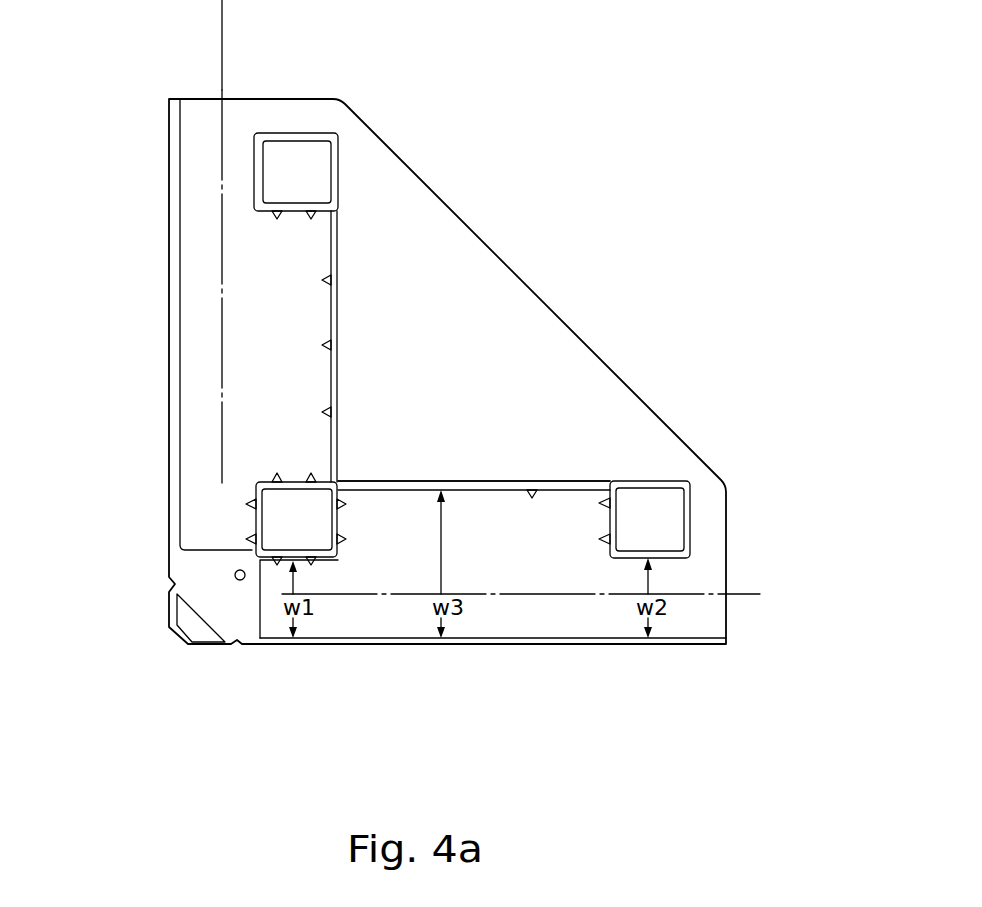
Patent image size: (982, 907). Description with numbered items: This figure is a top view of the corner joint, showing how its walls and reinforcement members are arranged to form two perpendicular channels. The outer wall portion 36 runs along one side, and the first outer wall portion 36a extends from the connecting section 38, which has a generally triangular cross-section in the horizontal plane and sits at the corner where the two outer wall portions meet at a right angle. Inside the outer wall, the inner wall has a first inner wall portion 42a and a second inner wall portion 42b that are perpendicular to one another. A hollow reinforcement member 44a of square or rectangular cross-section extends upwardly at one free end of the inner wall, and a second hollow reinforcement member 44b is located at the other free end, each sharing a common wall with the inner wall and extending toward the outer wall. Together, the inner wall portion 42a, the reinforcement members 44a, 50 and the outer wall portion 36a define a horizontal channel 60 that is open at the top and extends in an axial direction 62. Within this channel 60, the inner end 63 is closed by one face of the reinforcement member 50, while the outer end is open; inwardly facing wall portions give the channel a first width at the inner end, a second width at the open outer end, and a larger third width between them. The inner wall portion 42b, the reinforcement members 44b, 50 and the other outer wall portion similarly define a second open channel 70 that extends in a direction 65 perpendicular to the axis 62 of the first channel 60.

The outer wall portion 36 is at (169, 209).
The first outer wall portion 36a is at (573, 640).
The connecting section 38 is at (187, 583).
The first inner wall portion 42a is at (447, 480).
The second inner wall portion 42b is at (333, 307).
The hollow reinforcement member 44a is at (690, 513).
The hollow reinforcement member 44b is at (338, 178).
The reinforcement member 50 is at (323, 560).
The horizontal channel 60 is at (493, 602).
The axial direction 62 is at (740, 594).
The inner end 63 is at (260, 613).
The direction 65 is at (222, 27).
The open channel 70 is at (260, 263).